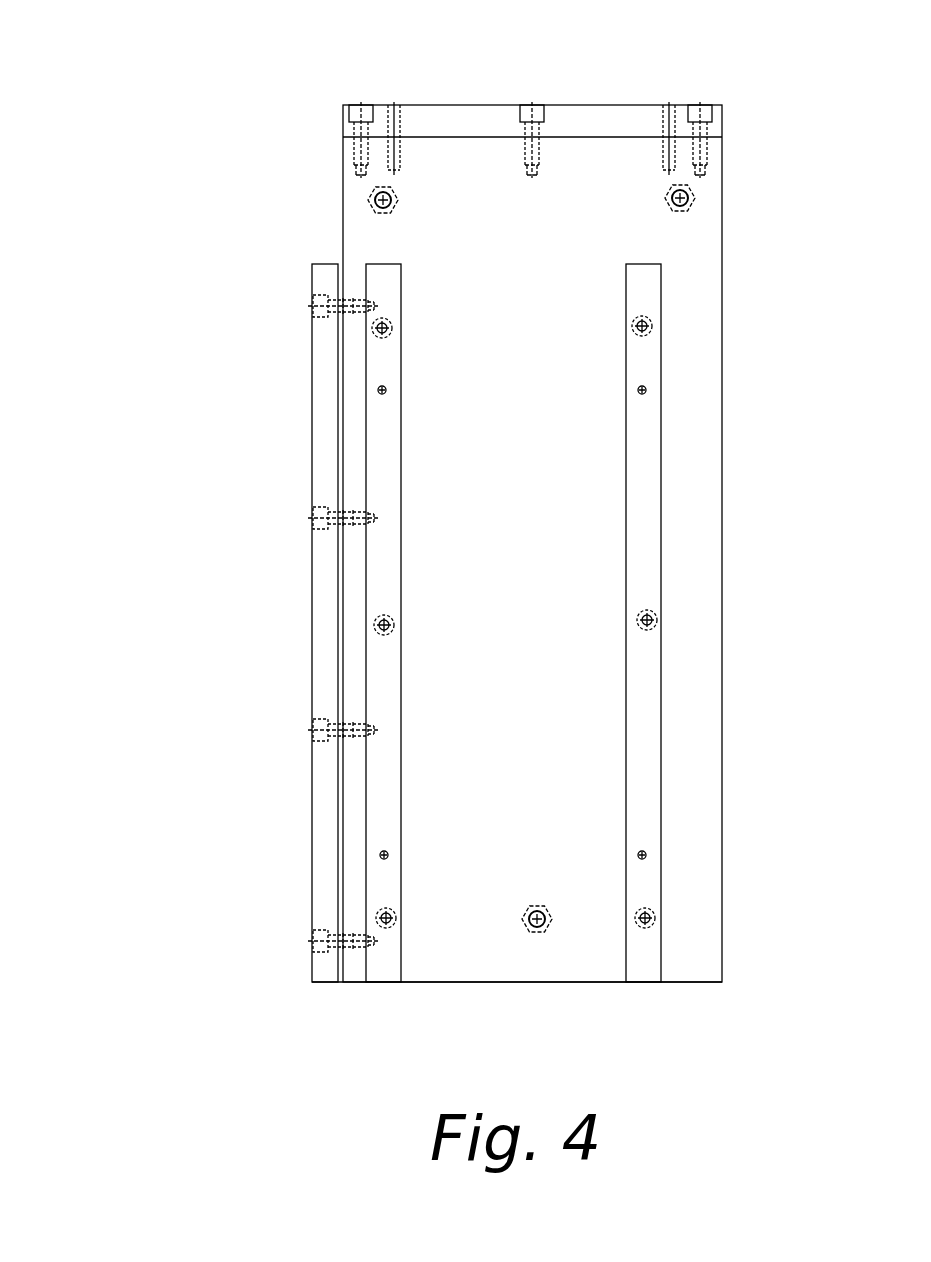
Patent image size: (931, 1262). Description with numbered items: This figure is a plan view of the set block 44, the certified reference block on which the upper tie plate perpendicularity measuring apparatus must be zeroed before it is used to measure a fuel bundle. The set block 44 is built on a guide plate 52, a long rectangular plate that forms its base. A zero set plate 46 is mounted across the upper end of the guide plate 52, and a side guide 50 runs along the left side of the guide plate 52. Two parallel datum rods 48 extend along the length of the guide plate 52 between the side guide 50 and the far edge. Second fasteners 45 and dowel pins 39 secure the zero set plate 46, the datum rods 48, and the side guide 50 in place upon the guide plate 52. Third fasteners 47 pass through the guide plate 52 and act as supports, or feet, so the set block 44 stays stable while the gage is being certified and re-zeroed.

The set block 44 is at (246, 197).
The second fasteners 45 is at (353, 105).
The zero set plate 46 is at (610, 112).
The third fasteners 47 is at (400, 200).
The datum rods 48 is at (395, 720).
The dowel pins 39 is at (394, 105).
The side guide 50 is at (312, 435).
The guide plate 52 is at (580, 493).